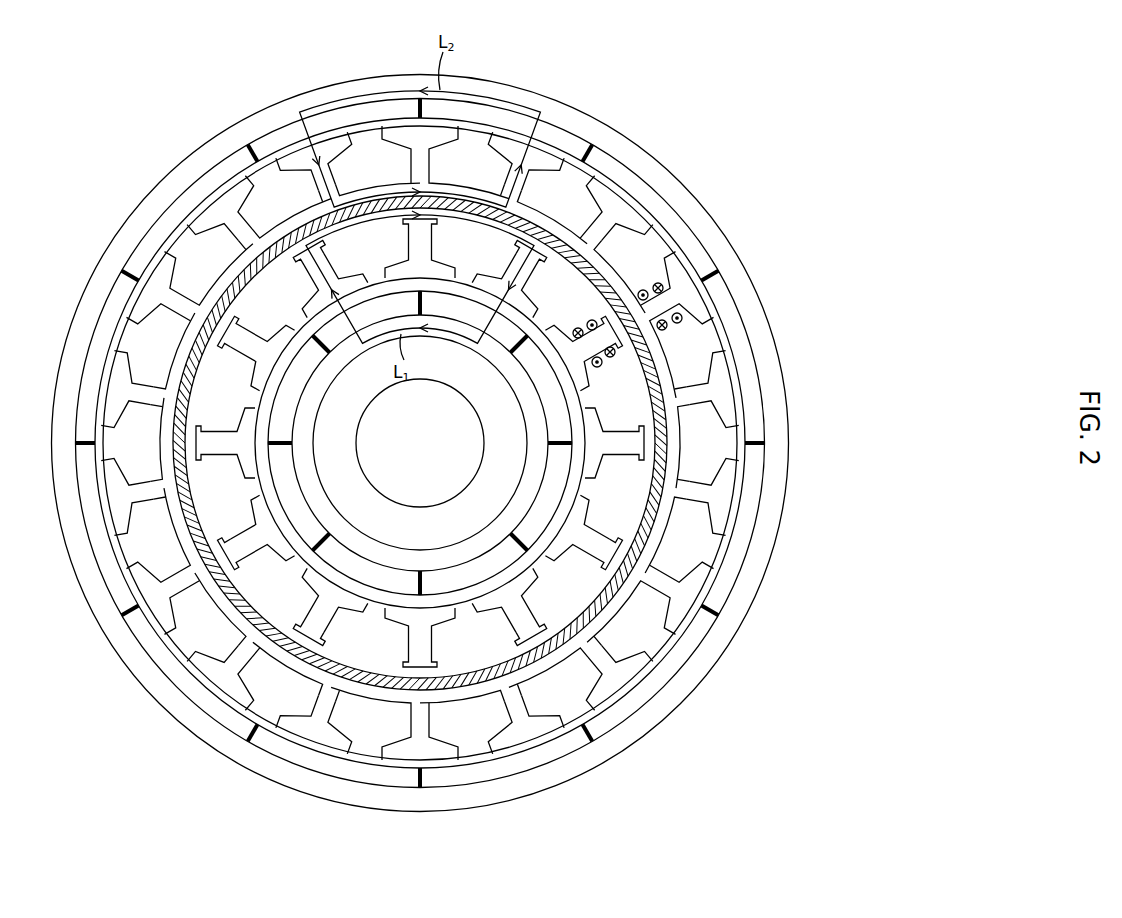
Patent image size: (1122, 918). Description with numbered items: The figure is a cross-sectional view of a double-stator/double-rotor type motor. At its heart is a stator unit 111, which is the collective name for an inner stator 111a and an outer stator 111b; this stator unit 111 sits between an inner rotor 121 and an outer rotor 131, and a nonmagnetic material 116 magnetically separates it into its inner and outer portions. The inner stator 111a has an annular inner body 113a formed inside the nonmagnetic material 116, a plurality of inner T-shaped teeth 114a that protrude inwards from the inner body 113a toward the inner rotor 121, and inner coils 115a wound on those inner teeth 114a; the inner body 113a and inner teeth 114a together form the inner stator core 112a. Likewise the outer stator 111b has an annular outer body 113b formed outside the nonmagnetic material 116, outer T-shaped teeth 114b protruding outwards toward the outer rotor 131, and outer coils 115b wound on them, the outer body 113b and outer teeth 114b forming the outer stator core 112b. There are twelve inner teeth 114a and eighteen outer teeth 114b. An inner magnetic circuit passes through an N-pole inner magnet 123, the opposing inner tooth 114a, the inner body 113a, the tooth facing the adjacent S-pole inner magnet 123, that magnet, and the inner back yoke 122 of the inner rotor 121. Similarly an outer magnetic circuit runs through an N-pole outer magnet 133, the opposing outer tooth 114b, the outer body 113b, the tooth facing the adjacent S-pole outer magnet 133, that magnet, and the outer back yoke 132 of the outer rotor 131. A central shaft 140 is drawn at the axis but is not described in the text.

The stator unit 111 is at (566, 443).
The inner stator 111a is at (561, 424).
The outer stator 111b is at (535, 443).
The inner stator core 112a is at (529, 425).
The outer stator core 112b is at (506, 443).
The inner body 113a is at (612, 330).
The outer body 113b is at (655, 308).
The inner T-shaped teeth 114a is at (596, 348).
The outer T-shaped teeth 114b is at (672, 296).
The inner coils 115a is at (583, 346).
The outer coils 115b is at (690, 322).
The nonmagnetic material 116 is at (692, 397).
The inner rotor 121 is at (504, 563).
The inner back yoke 122 is at (448, 585).
The inner magnet 123 is at (482, 542).
The outer rotor 131 is at (454, 443).
The outer back yoke 132 is at (700, 625).
The outer magnet 133 is at (688, 658).
The shaft 140 is at (472, 455).